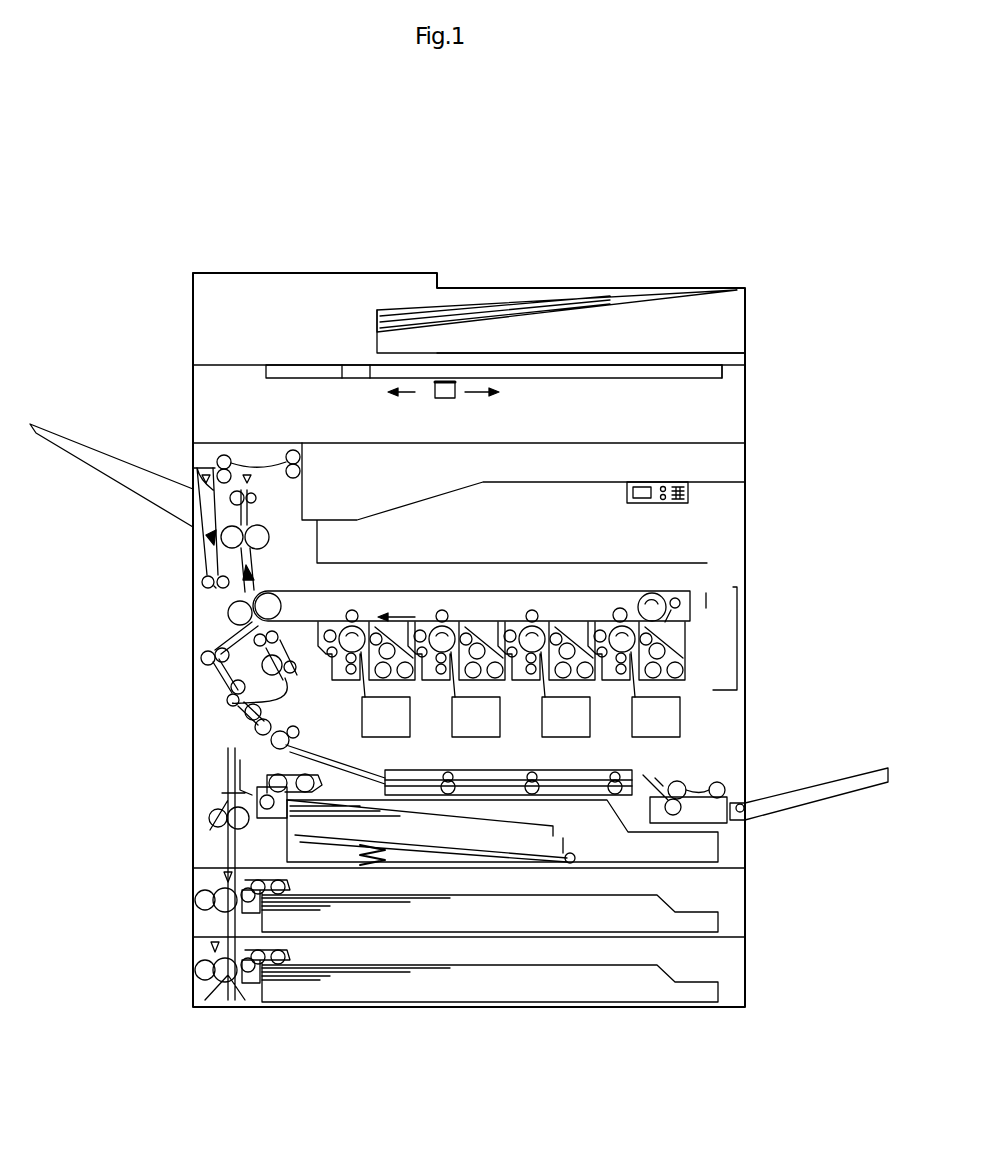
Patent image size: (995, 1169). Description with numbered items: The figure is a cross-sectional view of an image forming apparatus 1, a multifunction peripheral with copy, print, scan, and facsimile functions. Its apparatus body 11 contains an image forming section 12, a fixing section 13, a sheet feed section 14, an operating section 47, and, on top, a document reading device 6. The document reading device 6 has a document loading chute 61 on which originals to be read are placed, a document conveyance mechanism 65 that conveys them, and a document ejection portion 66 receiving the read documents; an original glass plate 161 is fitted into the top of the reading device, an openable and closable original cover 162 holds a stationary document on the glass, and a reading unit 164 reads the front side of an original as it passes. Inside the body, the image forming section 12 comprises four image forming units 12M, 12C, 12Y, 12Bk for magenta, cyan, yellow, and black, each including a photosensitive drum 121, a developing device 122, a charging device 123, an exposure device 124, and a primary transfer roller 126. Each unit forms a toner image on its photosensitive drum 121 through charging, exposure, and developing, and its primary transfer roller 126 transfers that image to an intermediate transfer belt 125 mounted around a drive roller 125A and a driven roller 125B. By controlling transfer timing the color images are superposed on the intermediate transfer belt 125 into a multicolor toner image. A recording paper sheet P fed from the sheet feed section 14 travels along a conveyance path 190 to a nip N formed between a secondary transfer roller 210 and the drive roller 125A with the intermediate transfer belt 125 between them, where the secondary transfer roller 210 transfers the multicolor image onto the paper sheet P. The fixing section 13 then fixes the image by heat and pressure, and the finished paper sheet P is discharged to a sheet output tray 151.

The image forming apparatus 1 is at (640, 208).
The document reading device 6 is at (436, 317).
The apparatus body 11 is at (439, 680).
The image forming section 12 is at (543, 639).
The image forming unit for black 12Bk is at (362, 612).
The image forming unit for yellow 12Y is at (442, 612).
The image forming unit for cyan 12C is at (535, 612).
The image forming unit for magenta 12M is at (691, 639).
The fixing section 13 is at (207, 538).
The sheet feed section 14 is at (725, 892).
The operating section 47 is at (688, 500).
The document loading chute 61 is at (688, 292).
The document conveyance mechanism 65 is at (283, 332).
The document ejection portion 66 is at (688, 352).
The photosensitive drum 121 is at (630, 652).
The developing device 122 is at (685, 665).
The charging device 123 is at (618, 680).
The exposure device 124 is at (680, 727).
The intermediate transfer belt 125 is at (481, 576).
The drive roller 125A is at (270, 600).
The driven roller 125B is at (685, 590).
The primary transfer roller 126 is at (615, 608).
The sheet output tray 151 is at (340, 517).
The original glass plate 161 is at (652, 372).
The original cover 162 is at (555, 358).
The reading unit 164 is at (455, 394).
The conveyance path 190 is at (240, 600).
The secondary transfer roller 210 is at (215, 625).
The nip N is at (240, 575).
The recording paper sheet P is at (550, 815).